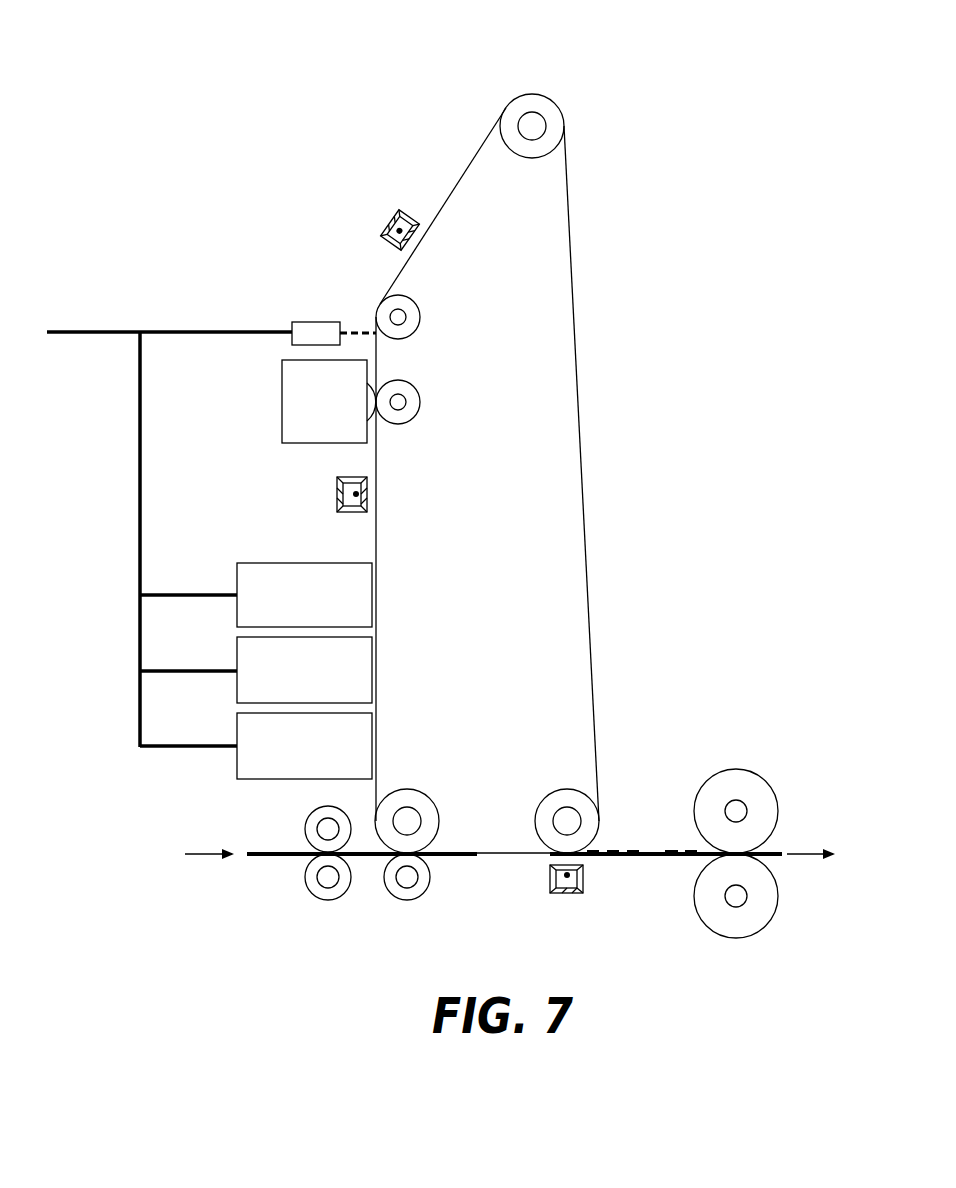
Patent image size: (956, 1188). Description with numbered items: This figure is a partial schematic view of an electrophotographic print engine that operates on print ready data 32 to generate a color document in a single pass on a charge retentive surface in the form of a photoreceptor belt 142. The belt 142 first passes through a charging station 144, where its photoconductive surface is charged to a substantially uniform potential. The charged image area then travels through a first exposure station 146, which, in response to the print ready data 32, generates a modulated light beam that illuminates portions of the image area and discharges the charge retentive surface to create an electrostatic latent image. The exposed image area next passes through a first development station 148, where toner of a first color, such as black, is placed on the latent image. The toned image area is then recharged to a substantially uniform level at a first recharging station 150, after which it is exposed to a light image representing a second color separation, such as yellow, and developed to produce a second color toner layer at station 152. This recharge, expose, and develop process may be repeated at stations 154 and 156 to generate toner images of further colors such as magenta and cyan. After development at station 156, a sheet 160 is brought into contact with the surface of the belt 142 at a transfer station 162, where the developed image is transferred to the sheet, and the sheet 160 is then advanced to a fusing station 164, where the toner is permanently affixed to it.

The print ready data 32 is at (97, 330).
The photoreceptor belt 142 is at (525, 95).
The charging station 144 is at (399, 231).
The first exposure station 146 is at (292, 325).
The first development station 148 is at (297, 432).
The first recharging station 150 is at (353, 495).
The station 152 is at (321, 608).
The station 154 is at (321, 683).
The station 156 is at (321, 759).
The sheet 160 is at (275, 856).
The transfer station 162 is at (566, 877).
The fusing station 164 is at (797, 722).